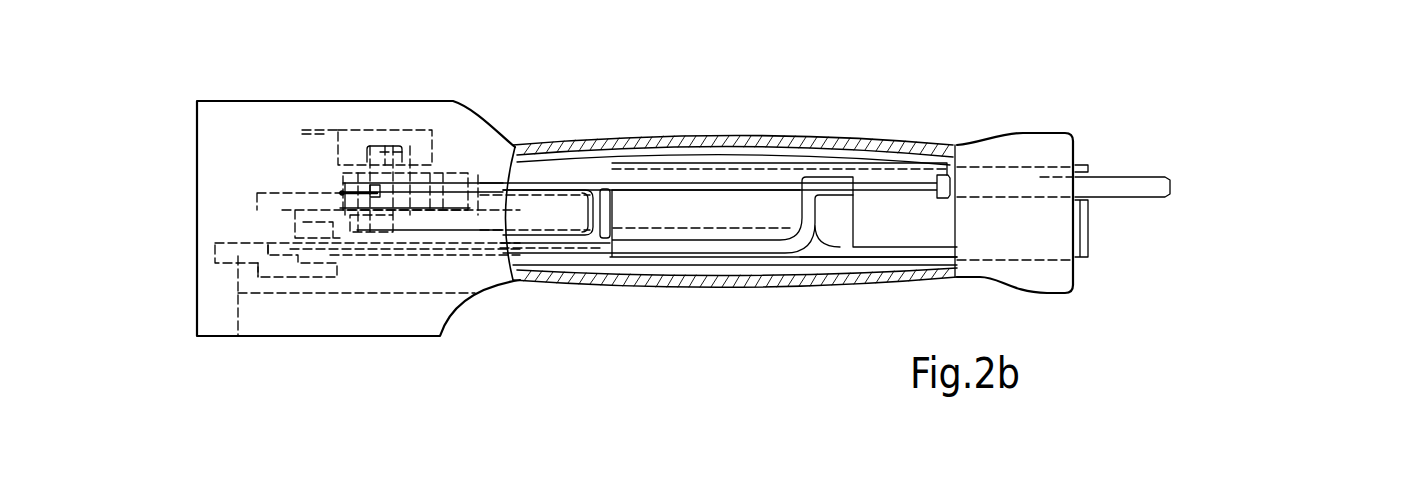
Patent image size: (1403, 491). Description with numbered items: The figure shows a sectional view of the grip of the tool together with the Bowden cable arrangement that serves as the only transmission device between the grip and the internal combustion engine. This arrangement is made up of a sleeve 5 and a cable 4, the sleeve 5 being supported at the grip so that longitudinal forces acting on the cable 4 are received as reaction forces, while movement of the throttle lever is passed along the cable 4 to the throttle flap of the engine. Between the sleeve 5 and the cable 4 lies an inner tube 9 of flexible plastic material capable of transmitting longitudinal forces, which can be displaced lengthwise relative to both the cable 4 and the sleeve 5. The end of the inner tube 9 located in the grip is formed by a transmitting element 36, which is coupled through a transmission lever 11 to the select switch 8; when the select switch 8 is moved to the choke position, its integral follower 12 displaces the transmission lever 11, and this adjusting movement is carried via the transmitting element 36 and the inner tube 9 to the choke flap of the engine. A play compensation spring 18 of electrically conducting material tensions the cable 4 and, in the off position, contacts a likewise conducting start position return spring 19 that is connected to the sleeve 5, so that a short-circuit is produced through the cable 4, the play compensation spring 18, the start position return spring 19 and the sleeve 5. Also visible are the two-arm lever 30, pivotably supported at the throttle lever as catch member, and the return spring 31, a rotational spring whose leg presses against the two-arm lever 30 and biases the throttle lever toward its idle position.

The cable 4 is at (567, 183).
The sleeve 5 is at (1121, 176).
The select switch 8 is at (330, 262).
The inner tube 9 is at (902, 180).
The transmission lever 11 is at (258, 258).
The integral follower 12 is at (312, 262).
The play compensation spring 18 is at (342, 193).
The start position return spring 19 is at (867, 245).
The two-arm lever 30 is at (394, 140).
The return spring 31 is at (352, 137).
The transmitting element 36 is at (819, 178).